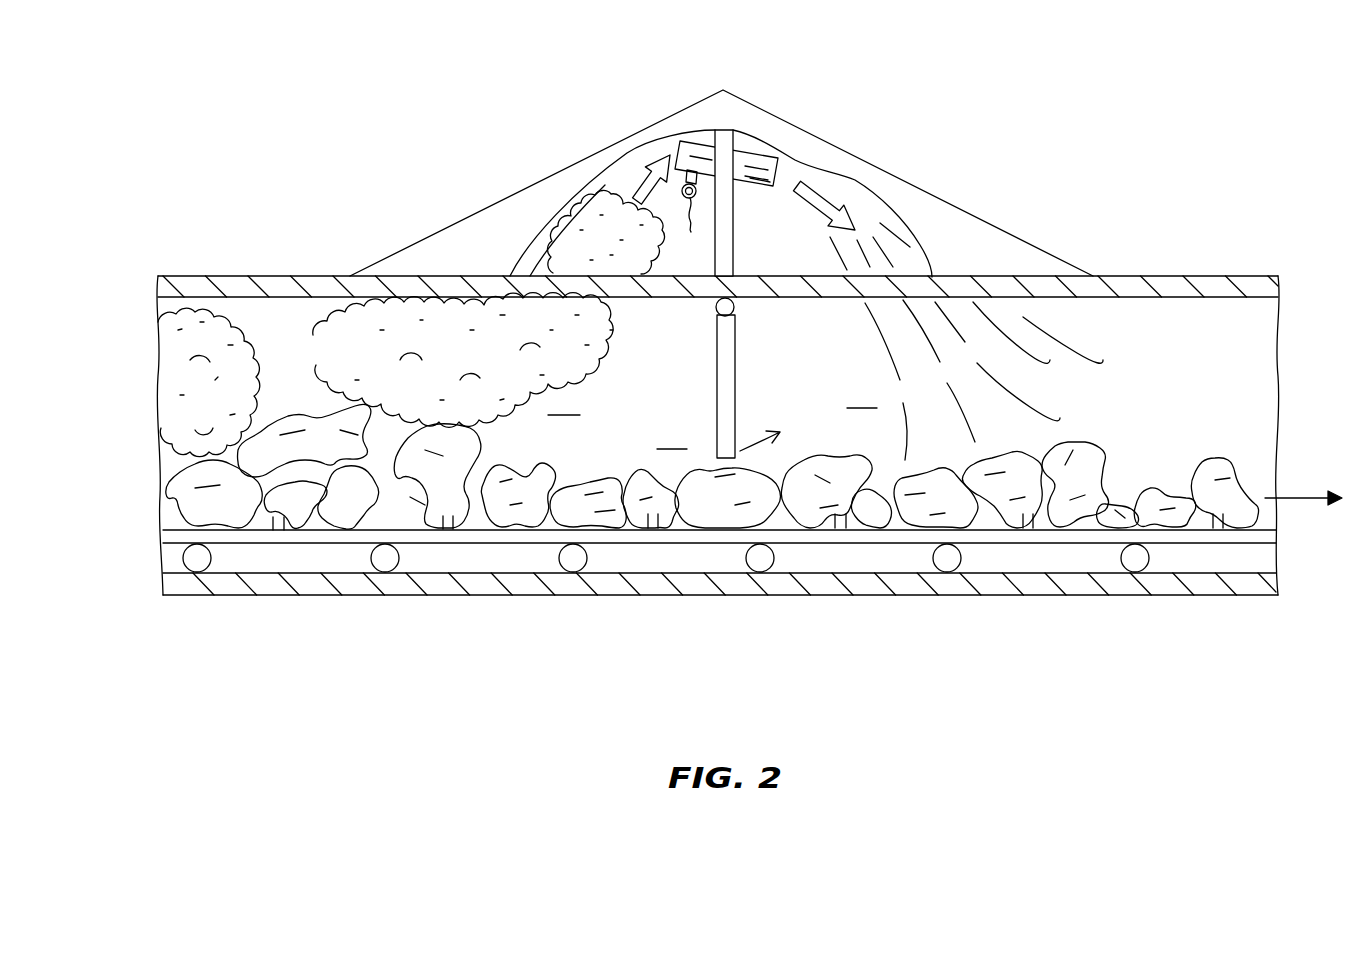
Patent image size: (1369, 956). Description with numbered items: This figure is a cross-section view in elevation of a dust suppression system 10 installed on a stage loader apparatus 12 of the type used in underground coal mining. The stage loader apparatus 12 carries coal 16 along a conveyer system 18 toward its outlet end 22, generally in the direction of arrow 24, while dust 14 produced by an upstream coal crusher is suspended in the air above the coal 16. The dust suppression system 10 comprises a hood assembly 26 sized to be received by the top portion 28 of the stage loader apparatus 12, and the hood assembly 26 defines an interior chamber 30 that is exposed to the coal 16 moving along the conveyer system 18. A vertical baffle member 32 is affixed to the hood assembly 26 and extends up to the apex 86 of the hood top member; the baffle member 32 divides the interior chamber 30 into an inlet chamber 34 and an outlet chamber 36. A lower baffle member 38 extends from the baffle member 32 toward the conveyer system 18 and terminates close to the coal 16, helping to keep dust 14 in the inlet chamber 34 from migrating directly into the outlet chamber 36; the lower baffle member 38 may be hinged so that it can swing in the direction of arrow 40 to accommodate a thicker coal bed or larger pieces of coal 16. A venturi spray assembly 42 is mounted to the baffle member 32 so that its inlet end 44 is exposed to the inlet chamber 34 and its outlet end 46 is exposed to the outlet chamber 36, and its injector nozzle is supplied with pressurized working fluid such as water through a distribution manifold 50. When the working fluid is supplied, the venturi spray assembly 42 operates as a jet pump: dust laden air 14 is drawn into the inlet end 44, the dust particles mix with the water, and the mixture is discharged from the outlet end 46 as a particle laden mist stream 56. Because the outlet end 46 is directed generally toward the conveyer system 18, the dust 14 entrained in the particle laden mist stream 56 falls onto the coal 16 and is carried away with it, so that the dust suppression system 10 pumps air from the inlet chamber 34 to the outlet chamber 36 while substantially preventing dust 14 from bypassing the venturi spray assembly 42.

The dust suppression system 10 is at (321, 101).
The stage loader apparatus 12 is at (695, 247).
The dust 14 is at (313, 337).
The coal 16 is at (182, 498).
The conveyer system 18 is at (1220, 546).
The outlet end 22 is at (1282, 376).
The arrow 24 is at (1300, 498).
The hood assembly 26 is at (444, 230).
The top portion 28 is at (223, 297).
The interior chamber 30 is at (712, 467).
The baffle member 32 is at (736, 200).
The inlet chamber 34 is at (564, 400).
The outlet chamber 36 is at (966, 341).
The lower baffle member 38 is at (735, 348).
The arrow 40 is at (752, 446).
The venturi spray assembly 42 is at (785, 118).
The inlet end 44 is at (678, 142).
The outlet end 46 is at (778, 169).
The distribution manifold 50 is at (692, 218).
The particle laden mist stream 56 is at (856, 220).
The apex 86 is at (723, 90).